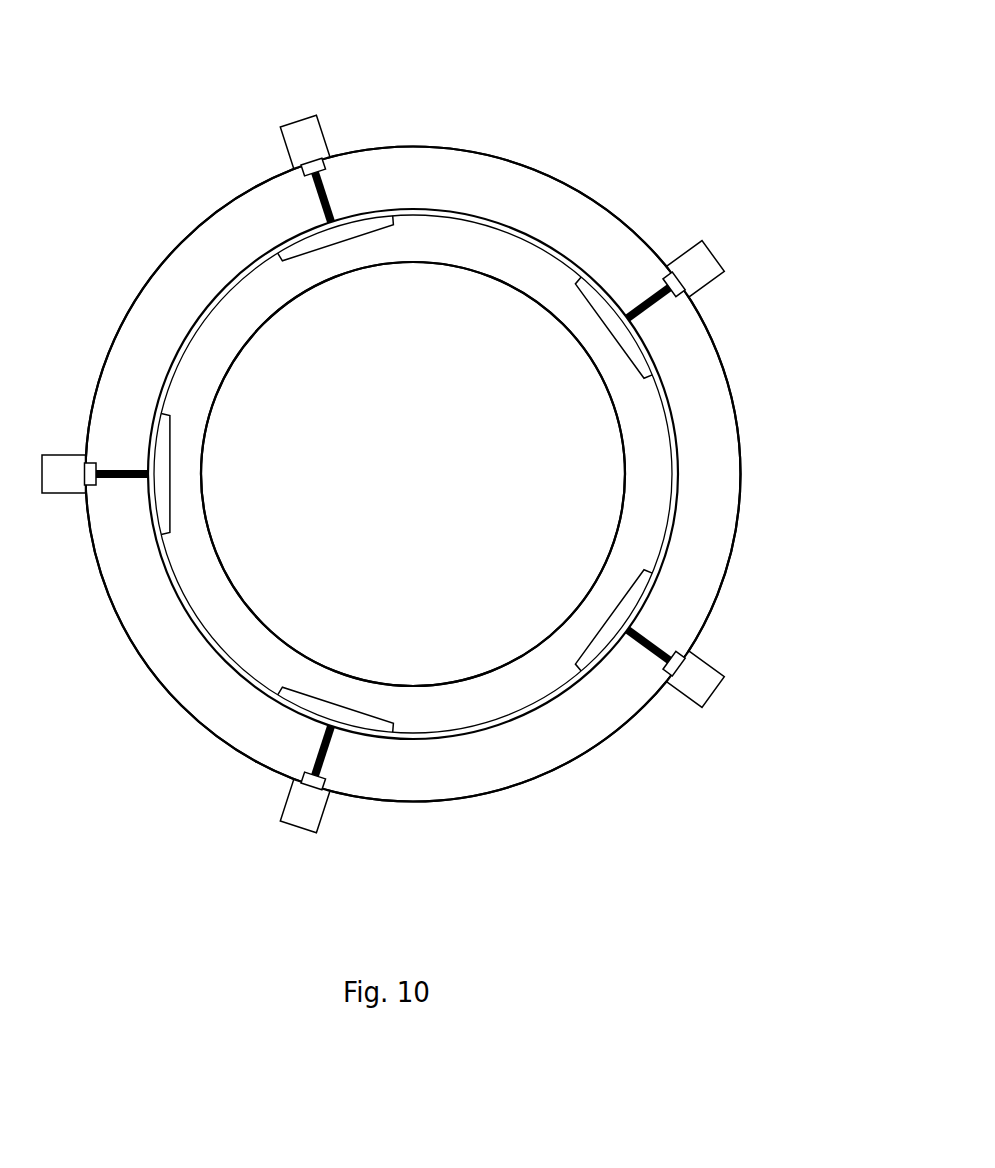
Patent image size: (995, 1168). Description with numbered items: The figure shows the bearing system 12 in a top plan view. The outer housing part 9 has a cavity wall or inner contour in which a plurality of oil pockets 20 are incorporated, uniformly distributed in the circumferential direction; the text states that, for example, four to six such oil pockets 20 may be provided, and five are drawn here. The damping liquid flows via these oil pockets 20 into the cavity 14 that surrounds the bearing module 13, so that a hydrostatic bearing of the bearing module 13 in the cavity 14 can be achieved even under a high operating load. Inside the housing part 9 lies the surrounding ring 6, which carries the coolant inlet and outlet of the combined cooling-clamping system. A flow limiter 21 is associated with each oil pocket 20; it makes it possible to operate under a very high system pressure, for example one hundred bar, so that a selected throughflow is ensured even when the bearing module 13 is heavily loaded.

The bearing system 12 is at (601, 58).
The housing part 9 is at (198, 268).
The cavity 14 is at (682, 498).
The oil pocket 20 is at (653, 352).
The flow limiter 21 is at (699, 277).
The surrounding ring 6 is at (634, 549).
The bearing module 13 is at (495, 636).